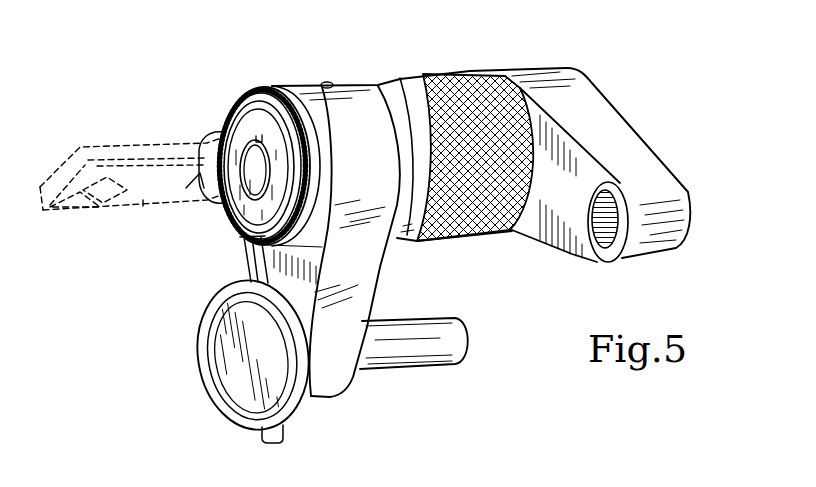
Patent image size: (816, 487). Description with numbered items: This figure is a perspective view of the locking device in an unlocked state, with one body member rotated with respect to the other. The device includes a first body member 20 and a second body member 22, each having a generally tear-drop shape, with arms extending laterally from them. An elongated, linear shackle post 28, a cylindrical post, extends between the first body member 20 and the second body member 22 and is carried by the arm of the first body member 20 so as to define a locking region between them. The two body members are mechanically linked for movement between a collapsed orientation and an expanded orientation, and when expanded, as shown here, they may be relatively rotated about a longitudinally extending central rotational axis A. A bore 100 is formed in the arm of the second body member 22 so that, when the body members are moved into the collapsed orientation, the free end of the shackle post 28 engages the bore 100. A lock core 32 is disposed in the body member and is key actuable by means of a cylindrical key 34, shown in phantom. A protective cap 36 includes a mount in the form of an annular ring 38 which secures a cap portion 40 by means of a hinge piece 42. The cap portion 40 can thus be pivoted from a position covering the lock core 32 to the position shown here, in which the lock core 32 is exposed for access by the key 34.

The first body member 20 is at (362, 262).
The second body member 22 is at (593, 120).
The shackle post 28 is at (423, 362).
The lock core 32 is at (245, 112).
The cylindrical key 34 is at (143, 207).
The protective cap 36 is at (170, 328).
The annular ring 38 is at (285, 83).
The cap portion 40 is at (260, 366).
The hinge piece 42 is at (242, 263).
The bore 100 is at (597, 226).
The central rotational axis A is at (638, 124).